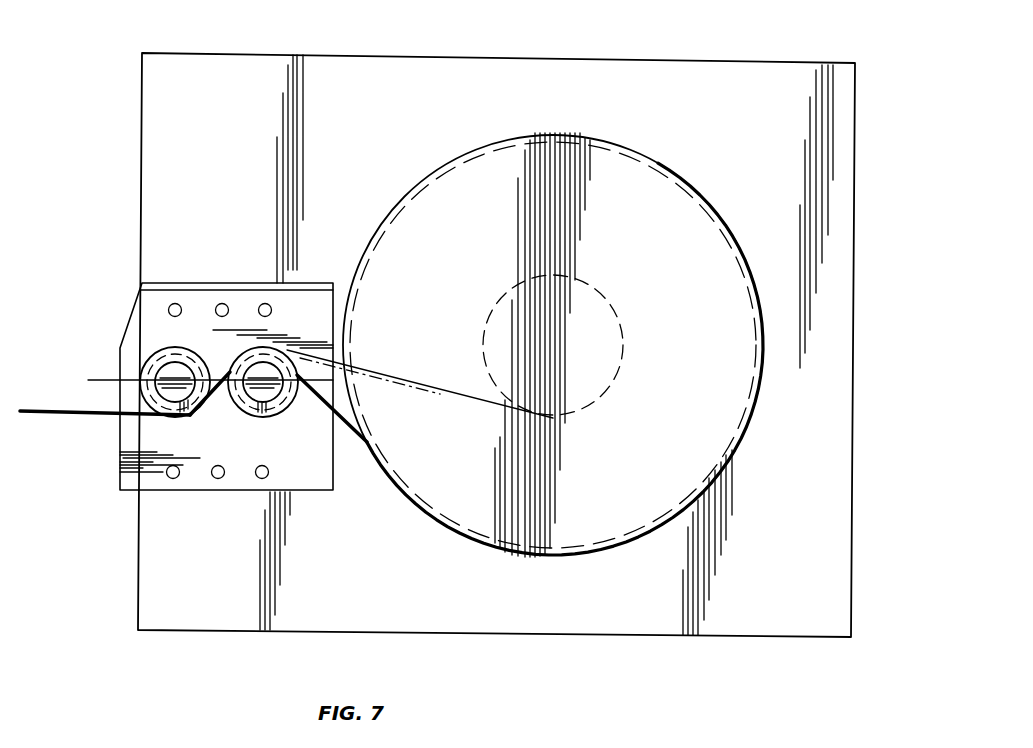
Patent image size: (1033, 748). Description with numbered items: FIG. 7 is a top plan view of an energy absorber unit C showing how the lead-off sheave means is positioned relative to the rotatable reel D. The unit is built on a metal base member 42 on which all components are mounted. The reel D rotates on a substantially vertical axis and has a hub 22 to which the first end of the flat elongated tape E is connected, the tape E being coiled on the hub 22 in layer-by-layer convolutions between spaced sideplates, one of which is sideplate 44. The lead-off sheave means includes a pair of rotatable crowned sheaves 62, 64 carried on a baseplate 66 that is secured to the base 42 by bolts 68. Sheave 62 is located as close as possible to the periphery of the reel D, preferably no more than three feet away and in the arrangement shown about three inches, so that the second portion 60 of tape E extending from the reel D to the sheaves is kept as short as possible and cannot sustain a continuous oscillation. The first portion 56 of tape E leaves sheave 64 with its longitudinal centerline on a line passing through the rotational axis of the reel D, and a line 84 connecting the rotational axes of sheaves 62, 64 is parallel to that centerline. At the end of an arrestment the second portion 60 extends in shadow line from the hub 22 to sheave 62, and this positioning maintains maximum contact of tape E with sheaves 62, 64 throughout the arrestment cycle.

The energy absorber unit C is at (750, 62).
The metal base member 42 is at (353, 68).
The rotatable reel D is at (616, 138).
The sideplate 44 is at (675, 197).
The hub 22 is at (592, 283).
The second portion of tape 60 is at (410, 383).
The flat elongated tape E is at (75, 414).
The first portion of tape 56 is at (46, 409).
The baseplate 66 is at (305, 480).
The bolts 68 is at (222, 303).
The sheave 64 is at (192, 416).
The sheave 62 is at (282, 418).
The line connecting sheave axes 84 is at (97, 380).